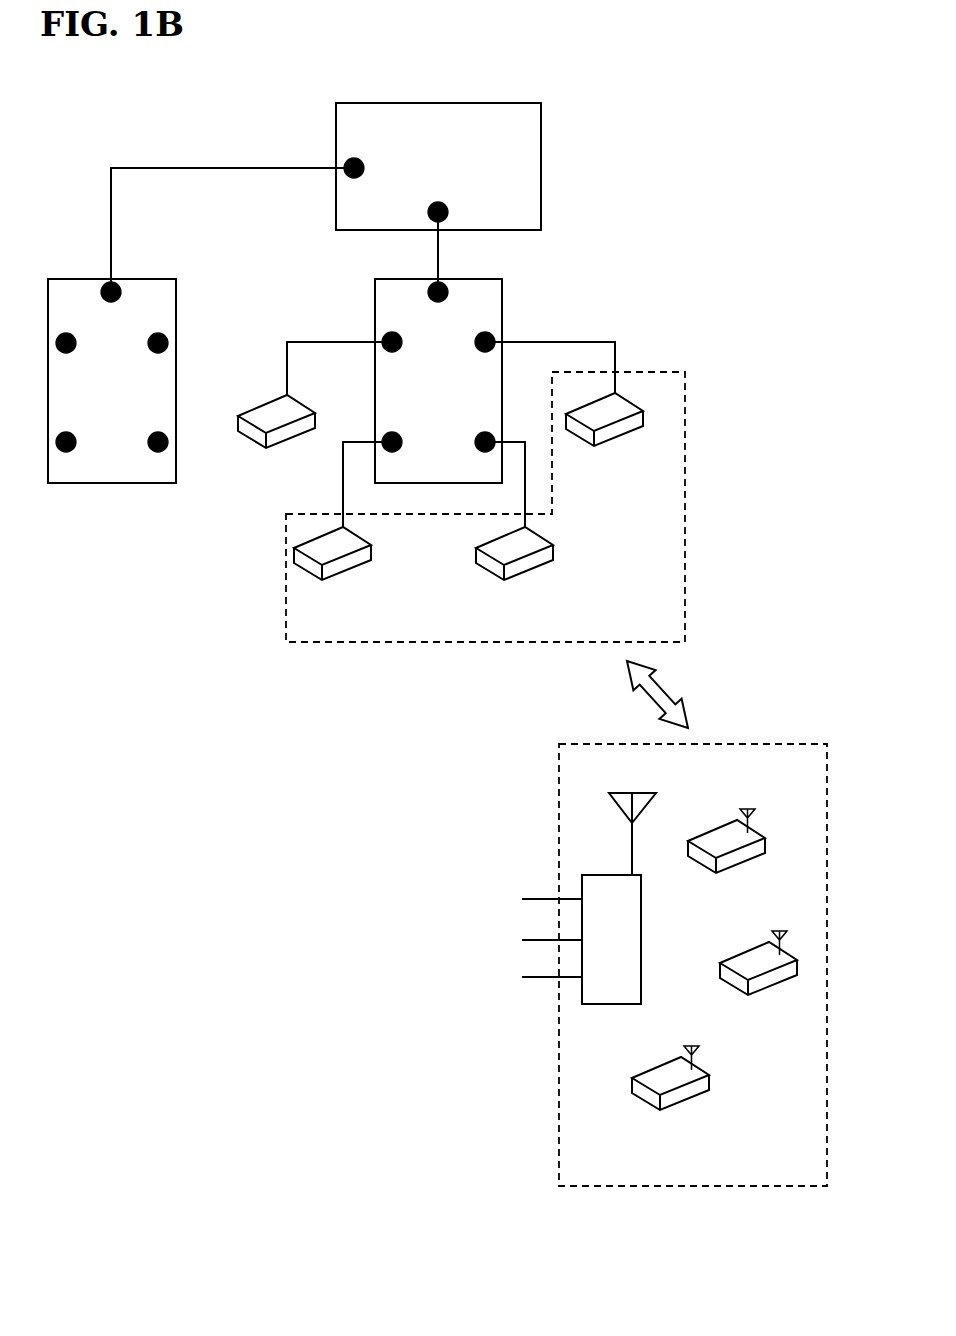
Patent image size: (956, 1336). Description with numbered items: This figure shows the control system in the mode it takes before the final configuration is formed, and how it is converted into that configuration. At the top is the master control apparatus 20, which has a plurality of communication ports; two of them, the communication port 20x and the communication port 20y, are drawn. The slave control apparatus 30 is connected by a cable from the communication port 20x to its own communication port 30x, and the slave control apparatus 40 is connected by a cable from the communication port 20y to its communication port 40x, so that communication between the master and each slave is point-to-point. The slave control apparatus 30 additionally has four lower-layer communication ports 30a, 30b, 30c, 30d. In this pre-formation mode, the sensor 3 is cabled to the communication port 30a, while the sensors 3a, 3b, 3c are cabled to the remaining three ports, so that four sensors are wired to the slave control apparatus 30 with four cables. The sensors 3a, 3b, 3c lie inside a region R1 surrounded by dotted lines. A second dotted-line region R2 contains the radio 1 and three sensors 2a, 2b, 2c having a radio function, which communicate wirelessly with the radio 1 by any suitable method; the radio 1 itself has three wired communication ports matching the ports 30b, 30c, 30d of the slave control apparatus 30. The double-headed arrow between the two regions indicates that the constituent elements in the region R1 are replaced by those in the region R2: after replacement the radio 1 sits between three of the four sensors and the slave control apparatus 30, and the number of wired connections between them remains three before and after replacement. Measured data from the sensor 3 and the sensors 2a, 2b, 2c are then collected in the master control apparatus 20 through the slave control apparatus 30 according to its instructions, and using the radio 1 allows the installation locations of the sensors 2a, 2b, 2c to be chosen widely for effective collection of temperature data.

The master control apparatus 20 is at (336, 113).
The communication port 20x is at (440, 236).
The communication port 20y is at (255, 225).
The slave control apparatus 30 is at (375, 289).
The communication port 30x is at (440, 304).
The communication port 30a is at (354, 363).
The communication port 30b is at (382, 479).
The communication port 30c is at (535, 362).
The communication port 30d is at (490, 479).
The slave control apparatus 40 is at (84, 279).
The communication port 40x is at (114, 304).
The sensor 3 is at (290, 440).
The sensor 3a is at (349, 572).
The sensor 3b is at (619, 436).
The sensor 3c is at (531, 572).
The region R1 is at (686, 530).
The region R2 is at (793, 744).
The radio 1 is at (617, 1005).
The sensor 2a is at (686, 1103).
The sensor 2b is at (774, 987).
The sensor 2c is at (725, 823).